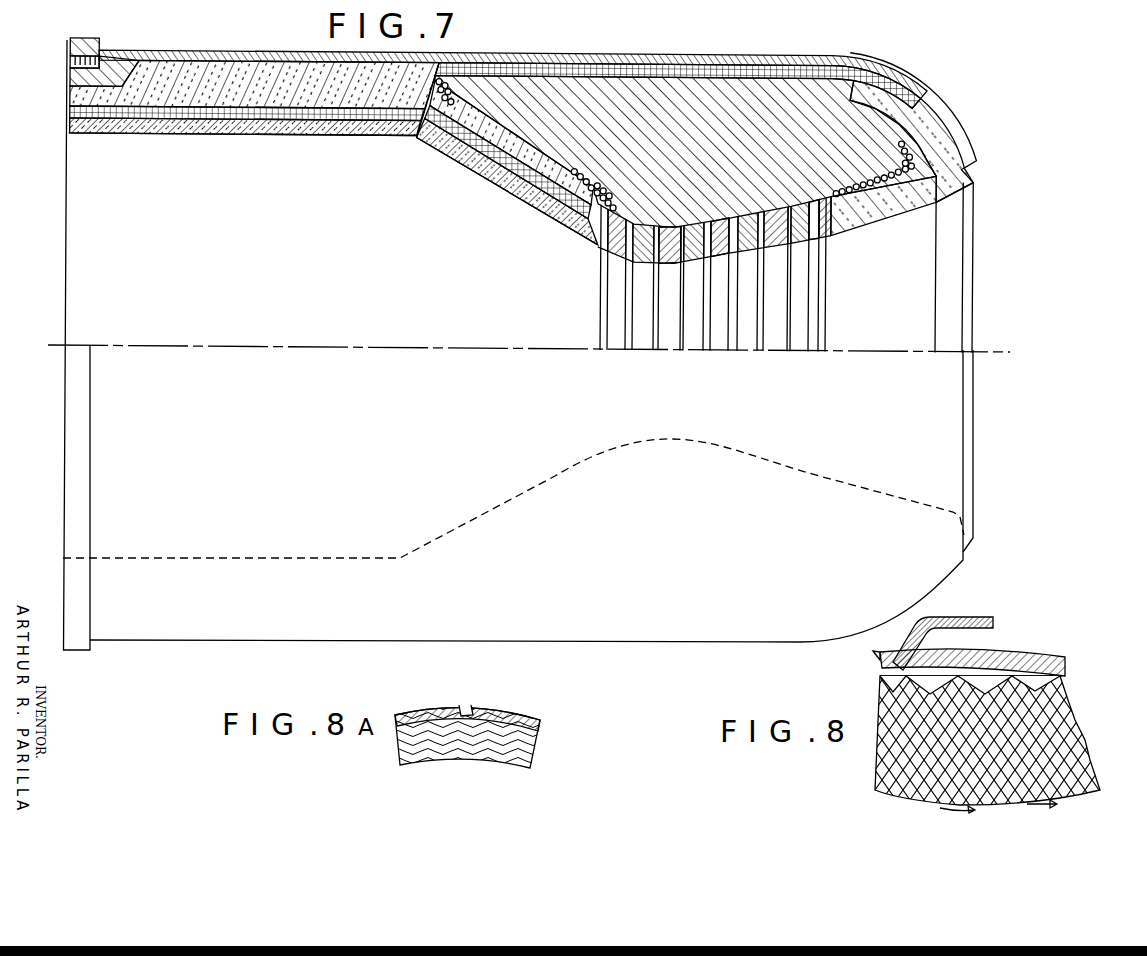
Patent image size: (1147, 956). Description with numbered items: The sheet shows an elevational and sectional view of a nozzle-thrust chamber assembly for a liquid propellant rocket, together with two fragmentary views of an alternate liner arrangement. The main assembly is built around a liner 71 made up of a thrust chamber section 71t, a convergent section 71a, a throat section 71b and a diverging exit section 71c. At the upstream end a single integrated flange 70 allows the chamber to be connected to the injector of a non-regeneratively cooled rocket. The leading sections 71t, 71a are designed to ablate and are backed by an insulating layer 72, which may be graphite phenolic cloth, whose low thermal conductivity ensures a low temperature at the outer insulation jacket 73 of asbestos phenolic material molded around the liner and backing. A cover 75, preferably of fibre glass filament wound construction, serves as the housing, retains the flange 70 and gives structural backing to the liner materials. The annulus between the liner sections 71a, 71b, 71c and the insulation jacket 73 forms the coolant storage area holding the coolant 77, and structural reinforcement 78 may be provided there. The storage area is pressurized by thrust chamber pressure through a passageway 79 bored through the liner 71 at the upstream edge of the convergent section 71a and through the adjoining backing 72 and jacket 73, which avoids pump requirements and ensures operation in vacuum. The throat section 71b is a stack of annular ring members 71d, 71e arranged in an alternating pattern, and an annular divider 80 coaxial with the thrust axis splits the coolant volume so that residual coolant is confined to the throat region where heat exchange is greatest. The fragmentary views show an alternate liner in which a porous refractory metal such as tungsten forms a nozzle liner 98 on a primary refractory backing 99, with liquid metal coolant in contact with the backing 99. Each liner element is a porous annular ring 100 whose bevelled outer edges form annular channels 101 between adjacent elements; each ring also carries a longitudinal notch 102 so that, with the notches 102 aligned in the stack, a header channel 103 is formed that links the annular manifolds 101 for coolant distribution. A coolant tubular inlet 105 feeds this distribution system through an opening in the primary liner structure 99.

In FIG. 7, the integrated flange 70 is at (96, 44).
In FIG. 7, the liner 71 is at (507, 169).
In FIG. 7, the convergent section 71a is at (512, 200).
In FIG. 7, the throat section 71b is at (600, 250).
In FIG. 7, the diverging exit section 71c is at (868, 220).
In FIG. 7, the annular ring member 71d is at (728, 222).
In FIG. 7, the annular ring member 71e is at (668, 224).
In FIG. 7, the thrust chamber section 71t is at (67, 128).
In FIG. 7, the insulating layer 72 is at (250, 117).
In FIG. 7, the insulation jacket 73 is at (244, 62).
In FIG. 7, the cover 75 is at (556, 57).
In FIG. 7, the coolant 77 is at (646, 129).
In FIG. 7, the structural reinforcement 78 is at (850, 178).
In FIG. 7, the passageway 79 is at (406, 140).
In FIG. 7, the annular divider 80 is at (811, 238).
In FIG. 8, the nozzle liner 98 is at (974, 713).
In FIG. 8, the primary refractory backing 99 is at (990, 660).
In FIG. 8A, the porous annular ring 100 is at (400, 758).
In FIG. 8, the porous annular ring 100 is at (1070, 699).
In FIG. 8A, the annular channel 101 is at (515, 713).
In FIG. 8, the annular channel 101 is at (1040, 684).
In FIG. 8A, the longitudinal notch 102 is at (470, 705).
In FIG. 8, the header channel 103 is at (886, 679).
In FIG. 8, the coolant tubular inlet 105 is at (993, 623).